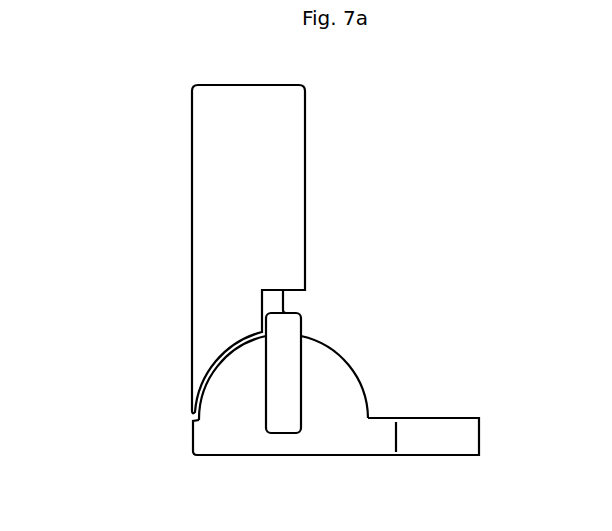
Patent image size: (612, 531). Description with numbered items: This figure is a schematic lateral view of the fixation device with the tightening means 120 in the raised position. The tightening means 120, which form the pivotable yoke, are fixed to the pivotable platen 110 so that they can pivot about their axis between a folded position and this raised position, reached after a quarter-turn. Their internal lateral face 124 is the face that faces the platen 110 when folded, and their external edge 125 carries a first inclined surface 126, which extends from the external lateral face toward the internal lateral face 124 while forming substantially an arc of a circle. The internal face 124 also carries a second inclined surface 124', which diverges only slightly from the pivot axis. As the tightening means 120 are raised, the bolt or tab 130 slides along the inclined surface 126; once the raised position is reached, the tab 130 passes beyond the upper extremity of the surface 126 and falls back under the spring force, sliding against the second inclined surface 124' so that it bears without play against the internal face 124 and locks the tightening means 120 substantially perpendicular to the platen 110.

The pivotable yoke 120 is at (370, 115).
The internal lateral face 124 is at (374, 246).
The second inclined surface 124' is at (374, 288).
The external edge 125 is at (240, 204).
The inclined surface 126 is at (215, 352).
The bolt 130 is at (283, 392).
The pivotable platen 110 is at (220, 424).